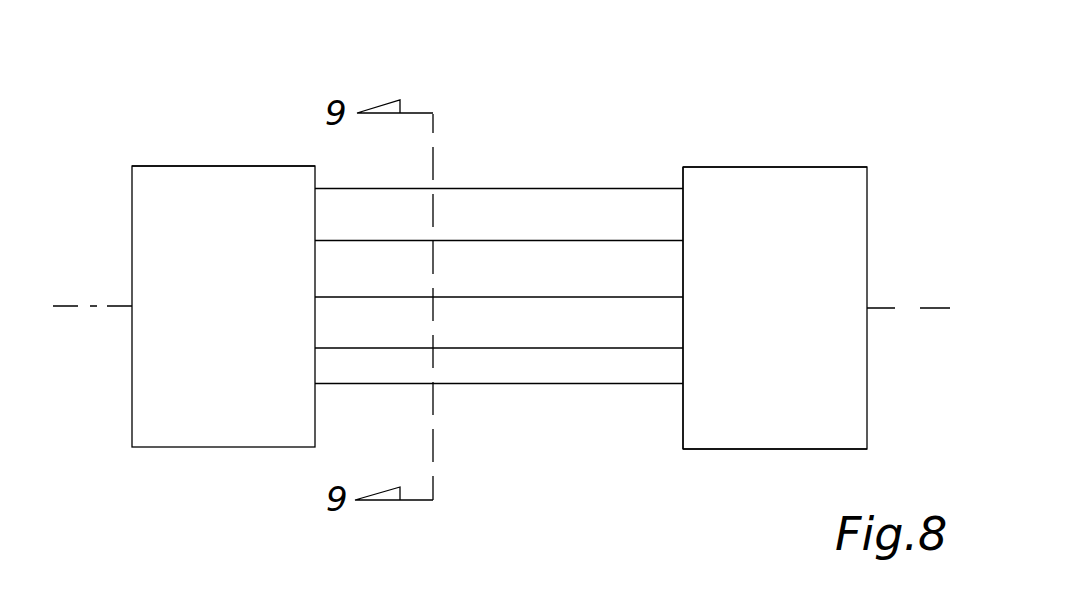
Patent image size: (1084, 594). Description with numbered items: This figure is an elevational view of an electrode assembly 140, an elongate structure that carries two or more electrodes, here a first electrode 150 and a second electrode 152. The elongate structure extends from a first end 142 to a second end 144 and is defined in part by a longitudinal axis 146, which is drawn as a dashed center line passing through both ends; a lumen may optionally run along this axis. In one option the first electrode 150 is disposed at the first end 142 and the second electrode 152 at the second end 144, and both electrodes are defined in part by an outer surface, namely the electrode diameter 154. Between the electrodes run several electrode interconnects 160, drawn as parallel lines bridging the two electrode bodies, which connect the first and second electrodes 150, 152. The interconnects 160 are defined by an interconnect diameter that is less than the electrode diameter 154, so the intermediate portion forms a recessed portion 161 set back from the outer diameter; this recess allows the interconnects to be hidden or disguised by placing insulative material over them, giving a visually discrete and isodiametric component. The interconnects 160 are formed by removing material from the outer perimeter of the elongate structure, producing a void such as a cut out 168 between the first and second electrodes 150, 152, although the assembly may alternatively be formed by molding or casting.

The electrode assembly 140 is at (238, 56).
The first end 142 is at (832, 167).
The second end 144 is at (132, 183).
The longitudinal axis 146 is at (907, 309).
The first electrode 150 is at (757, 167).
The second electrode 152 is at (157, 165).
The diameter 154 is at (755, 450).
The electrode interconnect 160 is at (490, 197).
The recessed portion 161 is at (683, 172).
The cut out 168 is at (562, 422).